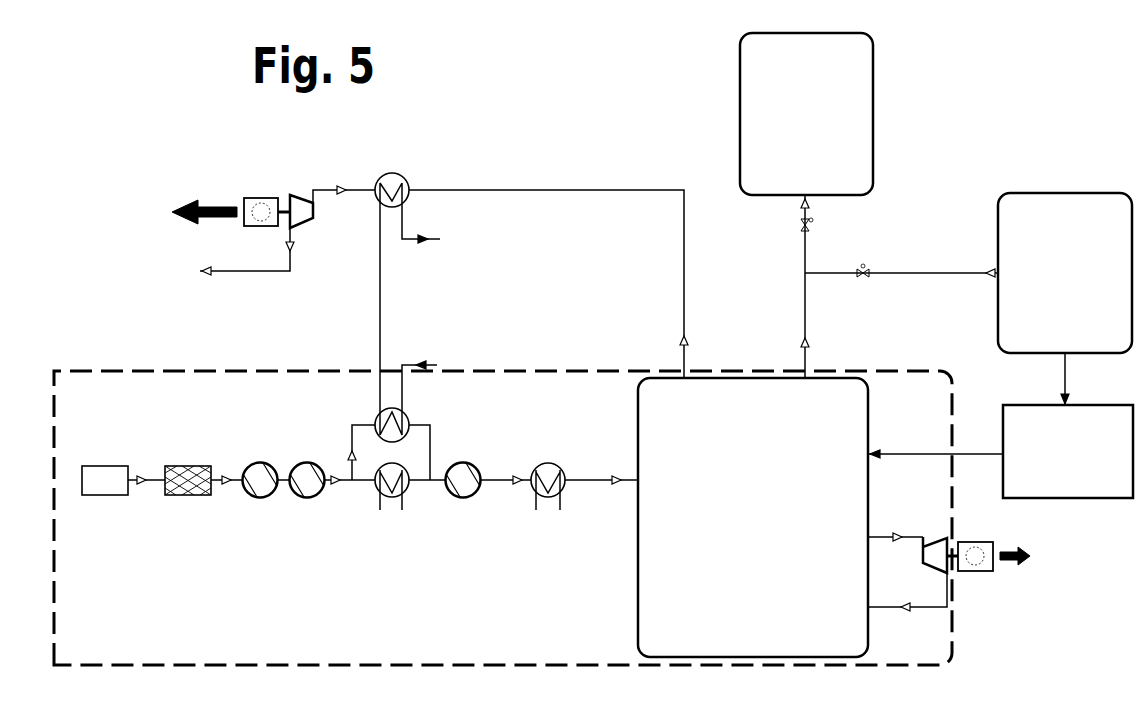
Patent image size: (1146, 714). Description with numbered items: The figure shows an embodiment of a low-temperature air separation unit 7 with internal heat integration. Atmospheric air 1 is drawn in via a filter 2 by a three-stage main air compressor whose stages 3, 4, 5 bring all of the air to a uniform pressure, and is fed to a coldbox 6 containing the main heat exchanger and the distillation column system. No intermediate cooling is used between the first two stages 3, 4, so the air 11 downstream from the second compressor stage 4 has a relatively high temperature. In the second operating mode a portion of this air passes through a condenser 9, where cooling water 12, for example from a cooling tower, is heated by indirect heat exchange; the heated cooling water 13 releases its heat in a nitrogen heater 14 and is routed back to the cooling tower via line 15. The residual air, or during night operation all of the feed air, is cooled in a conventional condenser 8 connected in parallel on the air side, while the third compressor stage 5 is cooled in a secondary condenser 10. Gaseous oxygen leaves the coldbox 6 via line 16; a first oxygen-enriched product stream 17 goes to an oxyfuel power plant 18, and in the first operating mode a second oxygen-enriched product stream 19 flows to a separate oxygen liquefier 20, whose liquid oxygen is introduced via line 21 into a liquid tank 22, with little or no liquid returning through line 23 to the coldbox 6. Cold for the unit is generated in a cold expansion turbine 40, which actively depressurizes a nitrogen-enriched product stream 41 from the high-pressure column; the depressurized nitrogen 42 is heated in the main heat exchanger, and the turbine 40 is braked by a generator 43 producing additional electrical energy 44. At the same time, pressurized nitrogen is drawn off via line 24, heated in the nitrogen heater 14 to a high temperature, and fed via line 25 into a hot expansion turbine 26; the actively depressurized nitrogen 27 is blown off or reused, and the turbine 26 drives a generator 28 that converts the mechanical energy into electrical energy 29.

The atmospheric air 1 is at (106, 497).
The filter 2 is at (191, 497).
The first compressor stage 3 is at (262, 500).
The second compressor stage 4 is at (301, 500).
The third compressor stage 5 is at (471, 500).
The coldbox 6 is at (753, 517).
The low-temperature air separation unit 7 is at (252, 662).
The condenser 8 is at (392, 505).
The condenser 9 is at (410, 413).
The secondary condenser 10 is at (549, 505).
The air 11 is at (335, 473).
The cooling water 12 is at (405, 362).
The heated cooling water 13 is at (382, 293).
The nitrogen heater 14 is at (390, 173).
The line 15 is at (421, 243).
The line 16 is at (800, 302).
The first oxygen-enriched product stream 17 is at (800, 252).
The oxyfuel power plant 18 is at (806, 114).
The second oxygen-enriched product stream 19 is at (935, 278).
The oxygen liquefier 20 is at (1065, 273).
The line 21 is at (1060, 373).
The liquid tank 22 is at (1068, 451).
The line 23 is at (980, 458).
The line 24 is at (682, 265).
The line 25 is at (325, 189).
The hot expansion turbine 26 is at (318, 214).
The actively depressurized nitrogen 27 is at (290, 273).
The generator 28 is at (265, 197).
The electrical energy 29 is at (213, 201).
The cold expansion turbine 40 is at (940, 540).
The nitrogen-enriched product stream 41 is at (893, 534).
The actively depressurized nitrogen 42 is at (936, 612).
The generator 43 is at (978, 541).
The electrical energy 44 is at (1006, 551).